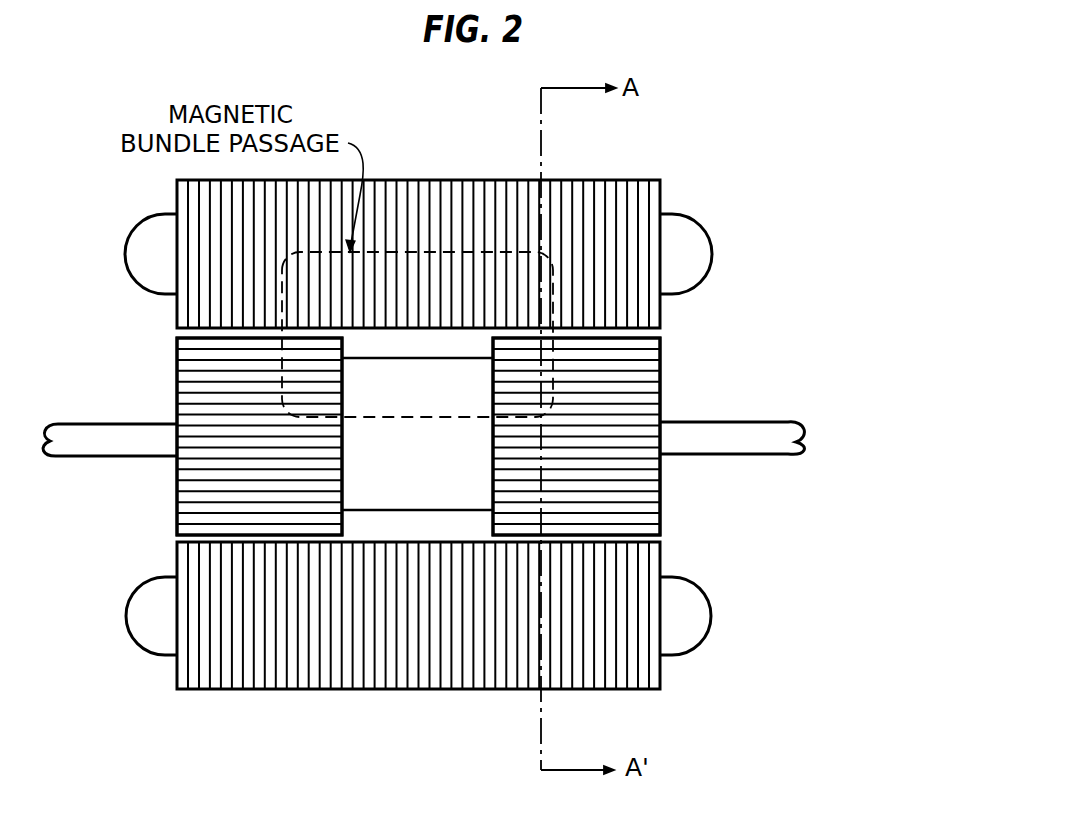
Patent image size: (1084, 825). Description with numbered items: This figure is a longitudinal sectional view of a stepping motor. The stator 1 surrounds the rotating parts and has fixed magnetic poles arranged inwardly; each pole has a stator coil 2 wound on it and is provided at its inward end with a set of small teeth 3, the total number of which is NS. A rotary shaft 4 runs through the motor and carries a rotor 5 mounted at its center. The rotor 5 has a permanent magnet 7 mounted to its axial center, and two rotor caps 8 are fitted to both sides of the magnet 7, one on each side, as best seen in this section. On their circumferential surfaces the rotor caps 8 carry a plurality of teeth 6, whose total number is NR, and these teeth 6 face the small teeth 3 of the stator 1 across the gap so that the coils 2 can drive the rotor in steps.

The stator 1 is at (660, 197).
The stator coil 2 is at (692, 289).
The small teeth 3 is at (653, 538).
The rotary shaft 4 is at (702, 437).
The rotor 5 is at (660, 388).
The teeth 6 is at (653, 537).
The permanent magnet 7 is at (430, 485).
The rotor cap 8 is at (615, 463).